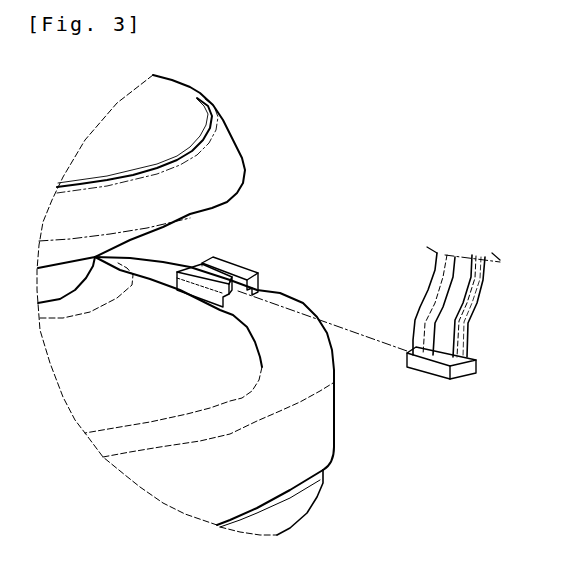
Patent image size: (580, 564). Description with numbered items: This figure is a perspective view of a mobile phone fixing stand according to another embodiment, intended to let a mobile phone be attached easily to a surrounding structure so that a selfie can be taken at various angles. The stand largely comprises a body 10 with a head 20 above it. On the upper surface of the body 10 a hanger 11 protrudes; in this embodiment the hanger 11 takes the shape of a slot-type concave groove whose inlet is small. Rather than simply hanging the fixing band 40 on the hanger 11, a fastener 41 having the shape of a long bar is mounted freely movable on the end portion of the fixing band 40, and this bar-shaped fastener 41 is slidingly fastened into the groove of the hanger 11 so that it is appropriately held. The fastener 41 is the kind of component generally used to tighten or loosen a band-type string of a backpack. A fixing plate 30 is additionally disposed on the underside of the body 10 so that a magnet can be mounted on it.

The body 10 is at (327, 426).
The hanger 11 is at (245, 270).
The head 20 is at (232, 155).
The fixing plate 30 is at (327, 485).
The fixing band 40 is at (423, 289).
The fastener 41 is at (465, 370).